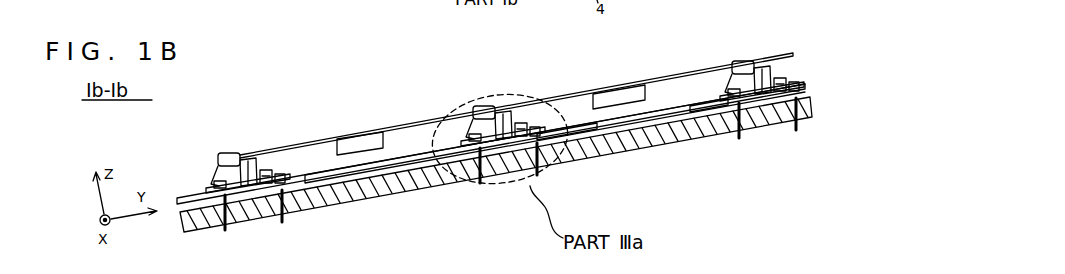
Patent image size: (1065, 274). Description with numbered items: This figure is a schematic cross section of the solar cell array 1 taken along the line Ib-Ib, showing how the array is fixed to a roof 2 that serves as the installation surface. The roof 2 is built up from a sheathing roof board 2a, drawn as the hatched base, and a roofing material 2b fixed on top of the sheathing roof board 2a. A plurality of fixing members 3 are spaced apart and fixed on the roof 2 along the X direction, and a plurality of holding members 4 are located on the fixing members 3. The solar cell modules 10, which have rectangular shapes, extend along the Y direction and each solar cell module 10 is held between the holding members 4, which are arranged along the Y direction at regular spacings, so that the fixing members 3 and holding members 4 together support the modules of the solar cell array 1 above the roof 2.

The solar cell array 1 is at (662, 169).
The roof 2 is at (192, 195).
The sheathing roof board 2a is at (371, 188).
The roofing material 2b is at (338, 182).
The fixing member 3 is at (253, 160).
The holding member 4 is at (230, 157).
The solar cell module 10 is at (370, 136).